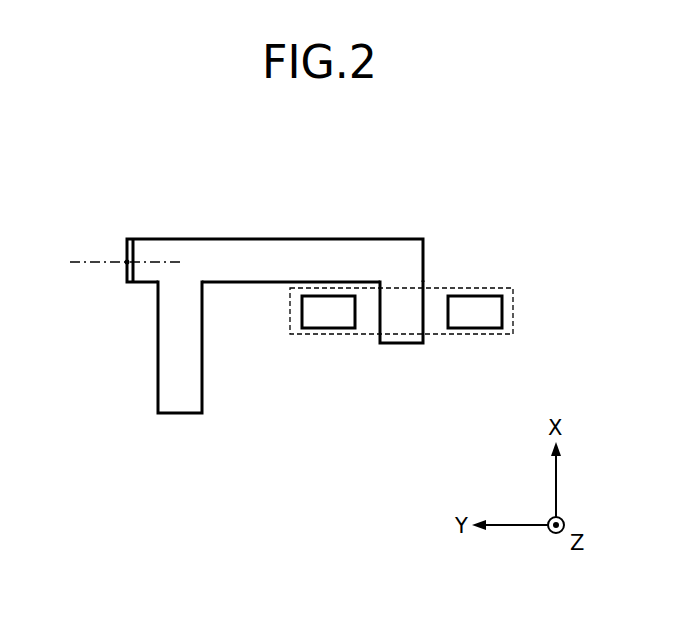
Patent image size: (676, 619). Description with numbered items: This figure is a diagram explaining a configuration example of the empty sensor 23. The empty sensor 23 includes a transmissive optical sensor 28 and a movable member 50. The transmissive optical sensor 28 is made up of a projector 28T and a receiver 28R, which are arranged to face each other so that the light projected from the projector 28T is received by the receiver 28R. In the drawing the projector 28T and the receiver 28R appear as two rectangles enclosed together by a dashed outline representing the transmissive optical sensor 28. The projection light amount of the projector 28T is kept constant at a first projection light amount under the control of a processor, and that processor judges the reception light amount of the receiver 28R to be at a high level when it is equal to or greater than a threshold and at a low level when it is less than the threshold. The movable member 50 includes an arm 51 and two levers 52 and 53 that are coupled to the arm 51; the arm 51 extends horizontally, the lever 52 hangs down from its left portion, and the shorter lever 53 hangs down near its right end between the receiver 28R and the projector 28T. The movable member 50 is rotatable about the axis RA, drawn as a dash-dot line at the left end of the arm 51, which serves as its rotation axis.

The empty sensor 23 is at (316, 197).
The movable member 50 is at (398, 239).
The arm 51 is at (220, 258).
The lever 52 is at (180, 396).
The lever 53 is at (401, 324).
The transmissive optical sensor 28 is at (472, 288).
The receiver 28R is at (302, 306).
The projector 28T is at (502, 312).
The axis RA is at (108, 261).